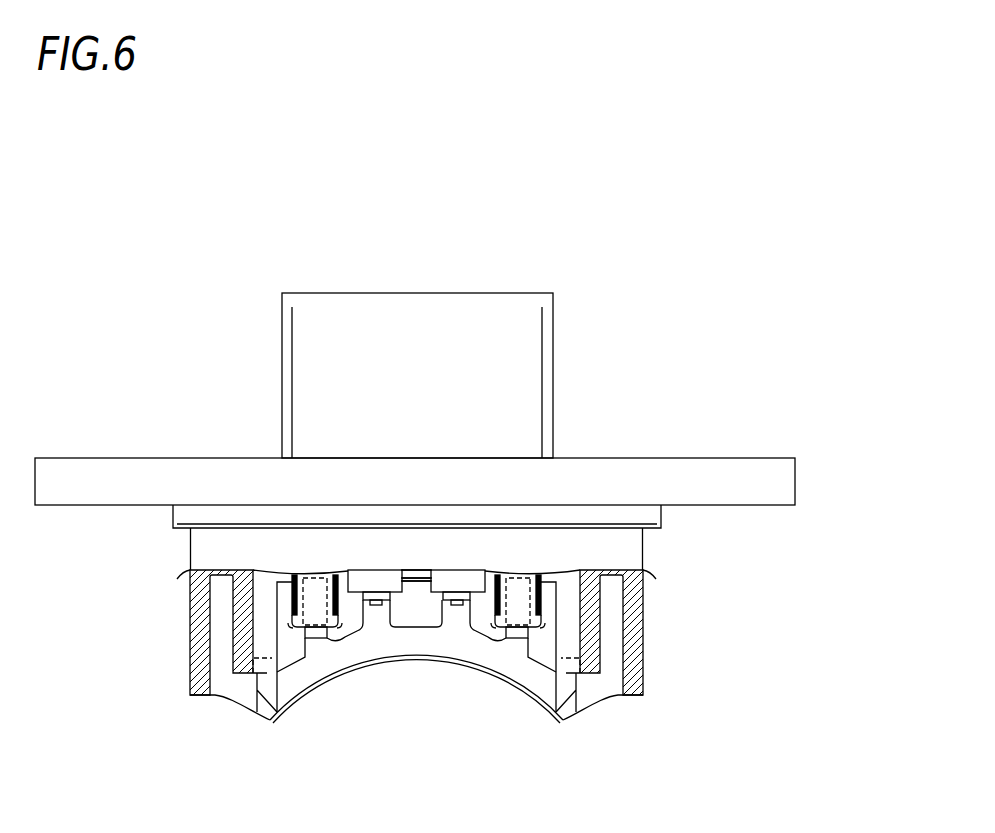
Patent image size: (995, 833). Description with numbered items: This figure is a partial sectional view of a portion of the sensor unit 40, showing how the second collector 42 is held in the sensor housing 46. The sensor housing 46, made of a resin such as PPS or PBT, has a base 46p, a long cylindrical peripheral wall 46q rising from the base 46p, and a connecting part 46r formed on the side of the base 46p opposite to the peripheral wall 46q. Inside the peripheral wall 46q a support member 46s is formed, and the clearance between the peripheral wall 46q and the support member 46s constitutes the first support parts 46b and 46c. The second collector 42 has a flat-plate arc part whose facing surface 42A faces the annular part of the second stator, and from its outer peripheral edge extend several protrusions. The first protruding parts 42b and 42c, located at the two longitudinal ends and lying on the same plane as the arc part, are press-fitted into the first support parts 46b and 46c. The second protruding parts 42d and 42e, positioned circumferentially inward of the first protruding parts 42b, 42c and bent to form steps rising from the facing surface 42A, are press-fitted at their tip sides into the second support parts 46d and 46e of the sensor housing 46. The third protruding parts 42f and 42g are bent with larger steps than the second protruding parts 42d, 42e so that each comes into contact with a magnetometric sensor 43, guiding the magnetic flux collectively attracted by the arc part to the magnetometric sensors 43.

The sensor unit 40 is at (656, 366).
The second collector 42 is at (438, 668).
The facing surface 42A is at (533, 683).
The first protruding part 42b is at (253, 660).
The first protruding part 42c is at (580, 662).
The second protruding part 42d is at (303, 598).
The second protruding part 42e is at (517, 598).
The third protruding part 42f is at (362, 601).
The third protruding part 42g is at (436, 605).
The magnetometric sensor 43 is at (370, 578).
The sensor housing 46 is at (713, 472).
The first support part 46b is at (268, 712).
The first support part 46c is at (563, 712).
The second support part 46d is at (292, 618).
The second support part 46e is at (538, 618).
The base 46p is at (752, 483).
The peripheral wall 46q is at (262, 713).
The connecting part 46r is at (518, 308).
The support member 46s is at (202, 695).